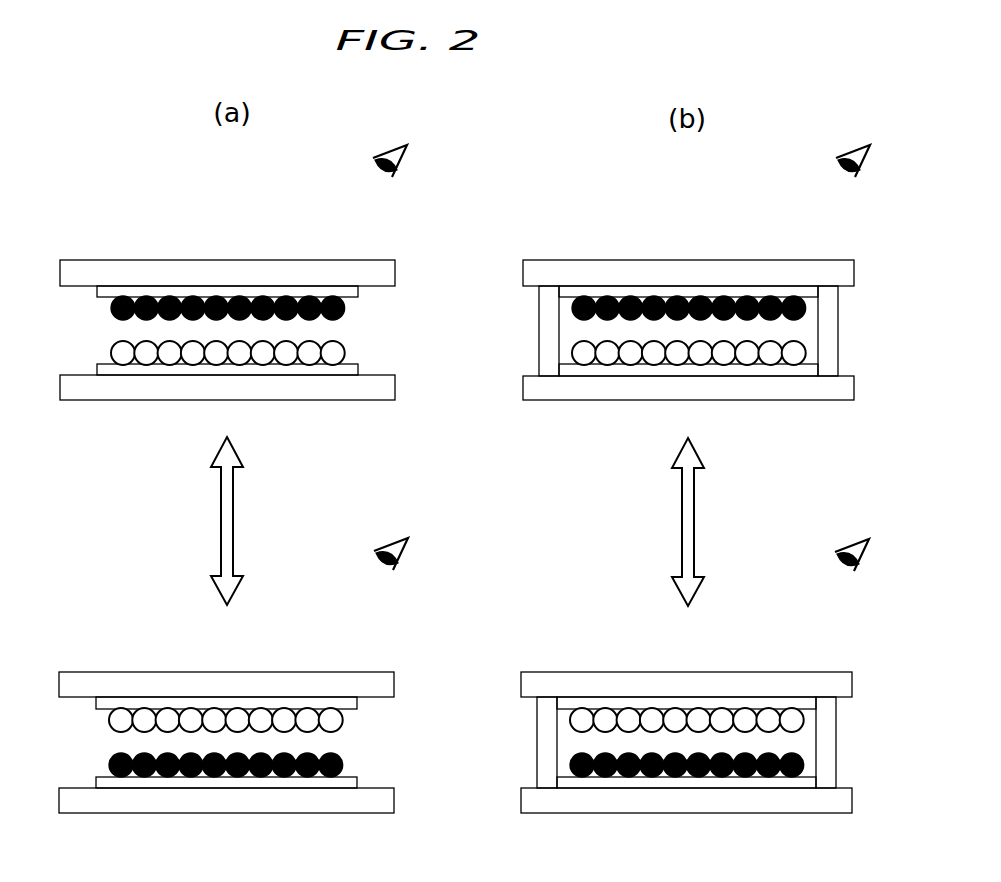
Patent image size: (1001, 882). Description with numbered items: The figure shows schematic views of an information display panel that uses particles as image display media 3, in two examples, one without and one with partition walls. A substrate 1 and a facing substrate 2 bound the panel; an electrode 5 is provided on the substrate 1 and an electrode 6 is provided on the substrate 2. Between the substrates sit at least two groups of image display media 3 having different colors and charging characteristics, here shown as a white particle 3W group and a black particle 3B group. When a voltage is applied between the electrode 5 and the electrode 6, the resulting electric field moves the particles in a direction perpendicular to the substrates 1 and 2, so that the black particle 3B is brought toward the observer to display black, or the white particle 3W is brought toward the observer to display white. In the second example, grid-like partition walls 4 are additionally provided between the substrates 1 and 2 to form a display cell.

The substrate 1 is at (157, 392).
The substrate 2 is at (229, 272).
The image display media 3 is at (481, 283).
The black particle 3B is at (347, 308).
The white particle 3W is at (347, 353).
The partition wall 4 is at (832, 330).
The electrode 5 is at (308, 372).
The electrode 6 is at (310, 290).